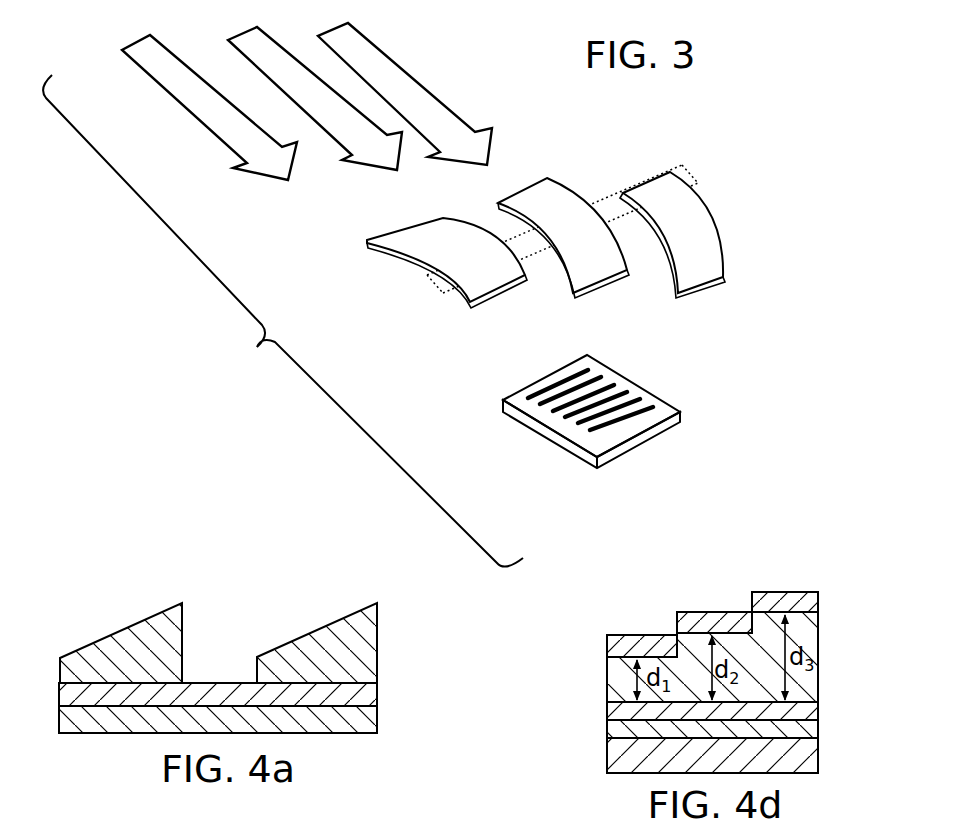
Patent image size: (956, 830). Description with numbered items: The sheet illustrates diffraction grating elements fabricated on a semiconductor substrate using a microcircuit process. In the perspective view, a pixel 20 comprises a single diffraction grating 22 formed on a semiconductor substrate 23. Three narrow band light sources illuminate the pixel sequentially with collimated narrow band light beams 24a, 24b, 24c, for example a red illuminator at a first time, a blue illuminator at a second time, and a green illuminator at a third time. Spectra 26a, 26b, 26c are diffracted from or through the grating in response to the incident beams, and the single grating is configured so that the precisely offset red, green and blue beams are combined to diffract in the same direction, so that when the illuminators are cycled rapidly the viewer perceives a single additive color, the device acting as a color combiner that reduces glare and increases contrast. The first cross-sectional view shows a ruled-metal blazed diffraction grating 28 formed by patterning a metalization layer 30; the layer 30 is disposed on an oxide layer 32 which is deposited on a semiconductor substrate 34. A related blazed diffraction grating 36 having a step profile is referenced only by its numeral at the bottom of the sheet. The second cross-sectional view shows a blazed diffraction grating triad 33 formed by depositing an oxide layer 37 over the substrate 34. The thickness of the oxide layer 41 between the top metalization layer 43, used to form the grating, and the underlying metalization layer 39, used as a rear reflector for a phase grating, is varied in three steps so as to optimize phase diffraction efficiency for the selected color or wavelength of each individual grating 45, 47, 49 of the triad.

In FIG. 3, the pixel 20 is at (560, 419).
In FIG. 3, the diffraction grating 22 is at (647, 405).
In FIG. 3, the semiconductor substrate 23 is at (563, 438).
In FIG. 3, the narrow band light beam 24a is at (138, 48).
In FIG. 3, the narrow band light beam 24b is at (248, 38).
In FIG. 3, the narrow band light beam 24c is at (337, 33).
In FIG. 3, the spectrum 26a is at (432, 222).
In FIG. 3, the spectrum 26b is at (555, 188).
In FIG. 3, the spectrum 26c is at (713, 252).
In FIG. 4a, the blazed diffraction grating 28 is at (243, 612).
In FIG. 4a, the metalization layer 30 is at (78, 650).
In FIG. 4a, the oxide layer 32 is at (368, 697).
In FIG. 4d, the blazed diffraction grating triad 33 is at (783, 570).
In FIG. 4a, the semiconductor substrate 34 is at (368, 723).
In FIG. 4d, the semiconductor substrate 34 is at (810, 755).
In FIG. 4a, the blazed diffraction grating 36 is at (255, 827).
In FIG. 4d, the oxide layer 37 is at (617, 728).
In FIG. 4d, the underlying metalization layer 39 is at (810, 710).
In FIG. 4d, the oxide layer 41 is at (617, 680).
In FIG. 4d, the top metalization layer 43 is at (810, 602).
In FIG. 4d, the grating 45 is at (623, 640).
In FIG. 4d, the grating 47 is at (697, 620).
In FIG. 4d, the grating 49 is at (767, 592).